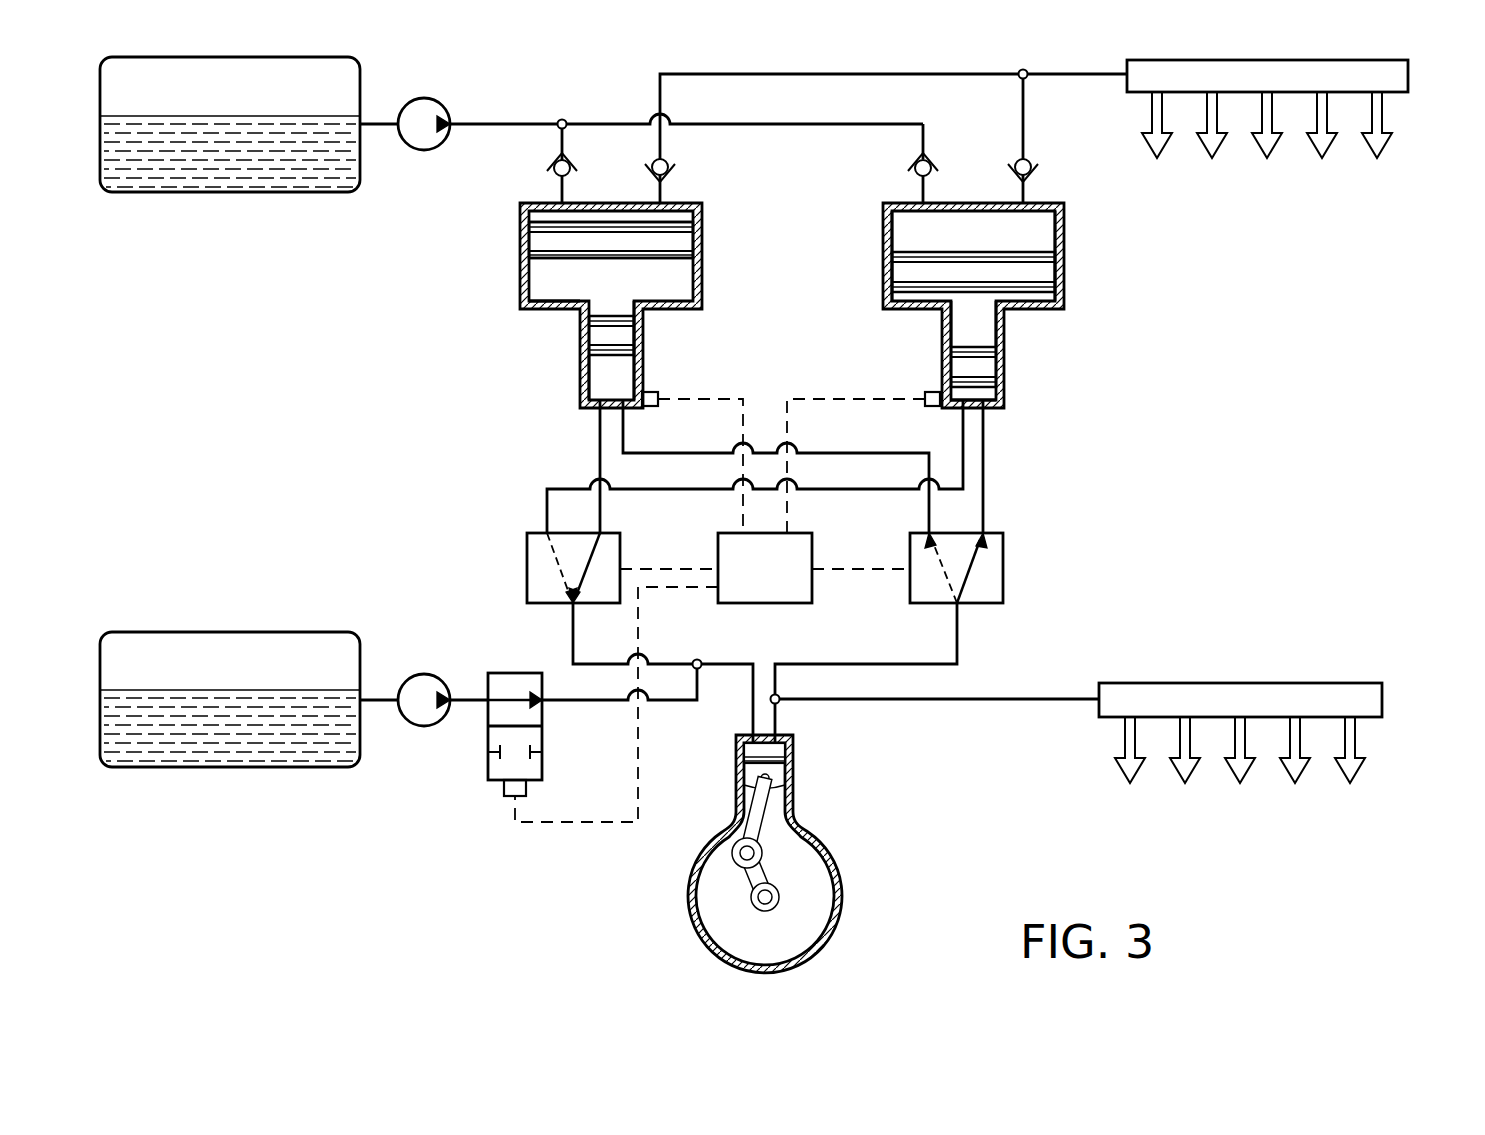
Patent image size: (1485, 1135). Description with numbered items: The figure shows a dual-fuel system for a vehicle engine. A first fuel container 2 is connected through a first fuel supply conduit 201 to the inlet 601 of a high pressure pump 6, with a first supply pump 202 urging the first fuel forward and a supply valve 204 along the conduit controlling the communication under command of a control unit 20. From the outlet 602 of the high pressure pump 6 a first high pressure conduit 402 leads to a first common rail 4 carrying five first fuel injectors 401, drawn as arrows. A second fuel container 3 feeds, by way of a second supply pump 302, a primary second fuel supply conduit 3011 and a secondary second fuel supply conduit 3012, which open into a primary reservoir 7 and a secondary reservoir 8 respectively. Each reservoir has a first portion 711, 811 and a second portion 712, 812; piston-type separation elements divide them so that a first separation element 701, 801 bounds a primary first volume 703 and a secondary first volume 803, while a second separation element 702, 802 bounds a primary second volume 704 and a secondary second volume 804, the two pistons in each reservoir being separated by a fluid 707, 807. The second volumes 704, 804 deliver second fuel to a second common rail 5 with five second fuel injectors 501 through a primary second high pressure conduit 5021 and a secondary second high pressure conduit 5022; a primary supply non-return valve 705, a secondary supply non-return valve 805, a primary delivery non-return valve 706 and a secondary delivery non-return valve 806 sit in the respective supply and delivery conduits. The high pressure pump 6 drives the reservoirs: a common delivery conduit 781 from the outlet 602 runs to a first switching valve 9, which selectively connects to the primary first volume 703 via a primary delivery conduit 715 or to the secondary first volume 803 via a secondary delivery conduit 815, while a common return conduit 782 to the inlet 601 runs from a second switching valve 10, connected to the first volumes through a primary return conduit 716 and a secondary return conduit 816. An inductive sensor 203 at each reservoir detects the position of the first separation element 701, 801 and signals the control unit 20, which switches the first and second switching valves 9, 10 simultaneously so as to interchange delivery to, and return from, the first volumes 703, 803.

The first fuel container 2 is at (228, 632).
The second fuel container 3 is at (228, 192).
The first common rail 4 is at (1269, 736).
The second common rail 5 is at (1298, 146).
The high pressure pump 6 is at (785, 853).
The primary reservoir 7 is at (596, 310).
The secondary reservoir 8 is at (987, 316).
The first switching valve 9 is at (1003, 570).
The second switching valve 10 is at (527, 570).
The control unit 20 is at (772, 603).
The first fuel supply conduit 201 is at (612, 702).
The first supply pump 202 is at (430, 727).
The inductive sensor 203 is at (660, 398).
The supply valve 204 is at (490, 775).
The second supply pump 302 is at (410, 150).
The primary second fuel supply conduit 3011 is at (560, 118).
The secondary second fuel supply conduit 3012 is at (832, 126).
The first fuel injector 401 is at (1136, 740).
The first high pressure conduit 402 is at (975, 703).
The second fuel injector 501 is at (1222, 115).
The primary second high pressure conduit 5021 is at (658, 95).
The secondary second high pressure conduit 5022 is at (1030, 117).
The inlet 601 is at (745, 735).
The outlet 602 is at (785, 735).
The first separation element 701 is at (598, 330).
The second separation element 702 is at (557, 240).
The primary first volume 703 is at (598, 375).
The primary second volume 704 is at (680, 215).
The primary supply non-return valve 705 is at (545, 163).
The primary delivery non-return valve 706 is at (676, 165).
The fluid 707 is at (558, 279).
The first portion 711 is at (645, 355).
The second portion 712 is at (556, 262).
The primary delivery conduit 715 is at (620, 438).
The primary return conduit 716 is at (598, 420).
The common delivery conduit 781 is at (957, 637).
The common return conduit 782 is at (573, 635).
The first separation element 801 is at (945, 355).
The second separation element 802 is at (1062, 292).
The secondary first volume 803 is at (976, 392).
The secondary second volume 804 is at (1020, 229).
The secondary supply non-return valve 805 is at (912, 165).
The secondary delivery non-return valve 806 is at (1037, 170).
The fluid 807 is at (976, 322).
The first portion 811 is at (976, 363).
The second portion 812 is at (890, 253).
The secondary delivery conduit 815 is at (985, 465).
The secondary return conduit 816 is at (546, 505).